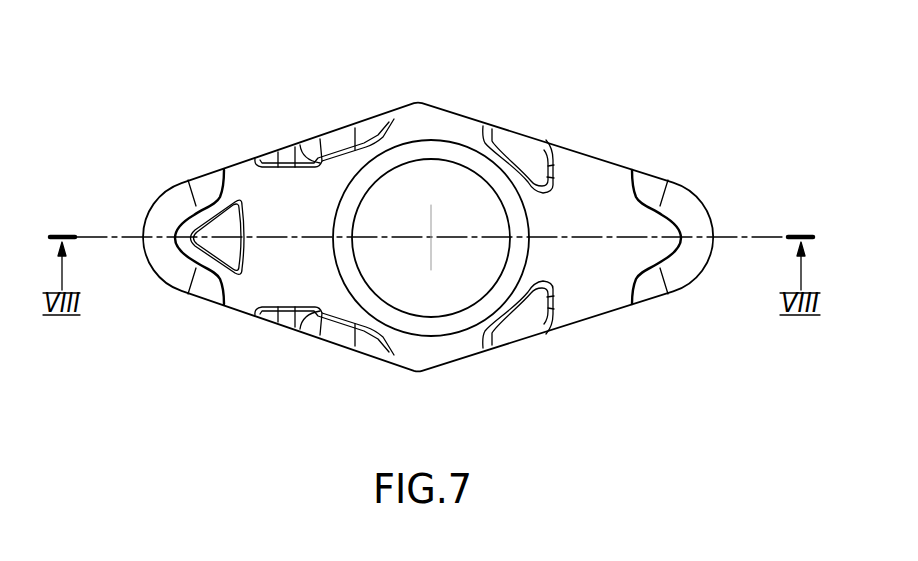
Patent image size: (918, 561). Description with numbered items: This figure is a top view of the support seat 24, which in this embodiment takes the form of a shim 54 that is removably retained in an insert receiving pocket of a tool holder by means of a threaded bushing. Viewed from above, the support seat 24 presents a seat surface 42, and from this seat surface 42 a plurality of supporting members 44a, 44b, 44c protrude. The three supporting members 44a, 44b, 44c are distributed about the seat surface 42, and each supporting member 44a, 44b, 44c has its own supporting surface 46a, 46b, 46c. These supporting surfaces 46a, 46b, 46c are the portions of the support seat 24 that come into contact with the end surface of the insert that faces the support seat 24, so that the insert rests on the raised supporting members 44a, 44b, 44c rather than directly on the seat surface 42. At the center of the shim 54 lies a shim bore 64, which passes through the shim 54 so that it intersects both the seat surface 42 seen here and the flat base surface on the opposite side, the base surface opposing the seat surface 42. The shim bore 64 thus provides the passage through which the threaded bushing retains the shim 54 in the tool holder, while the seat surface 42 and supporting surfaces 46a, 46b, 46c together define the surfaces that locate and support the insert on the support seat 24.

The support seat 24 is at (258, 128).
The seat surface 42 is at (309, 283).
The supporting member 44a is at (204, 268).
The supporting member 44b is at (556, 140).
The supporting member 44c is at (556, 333).
The supporting surface 46a is at (226, 250).
The supporting surface 46b is at (520, 150).
The supporting surface 46c is at (522, 324).
The shim 54 is at (284, 111).
The shim bore 64 is at (412, 183).